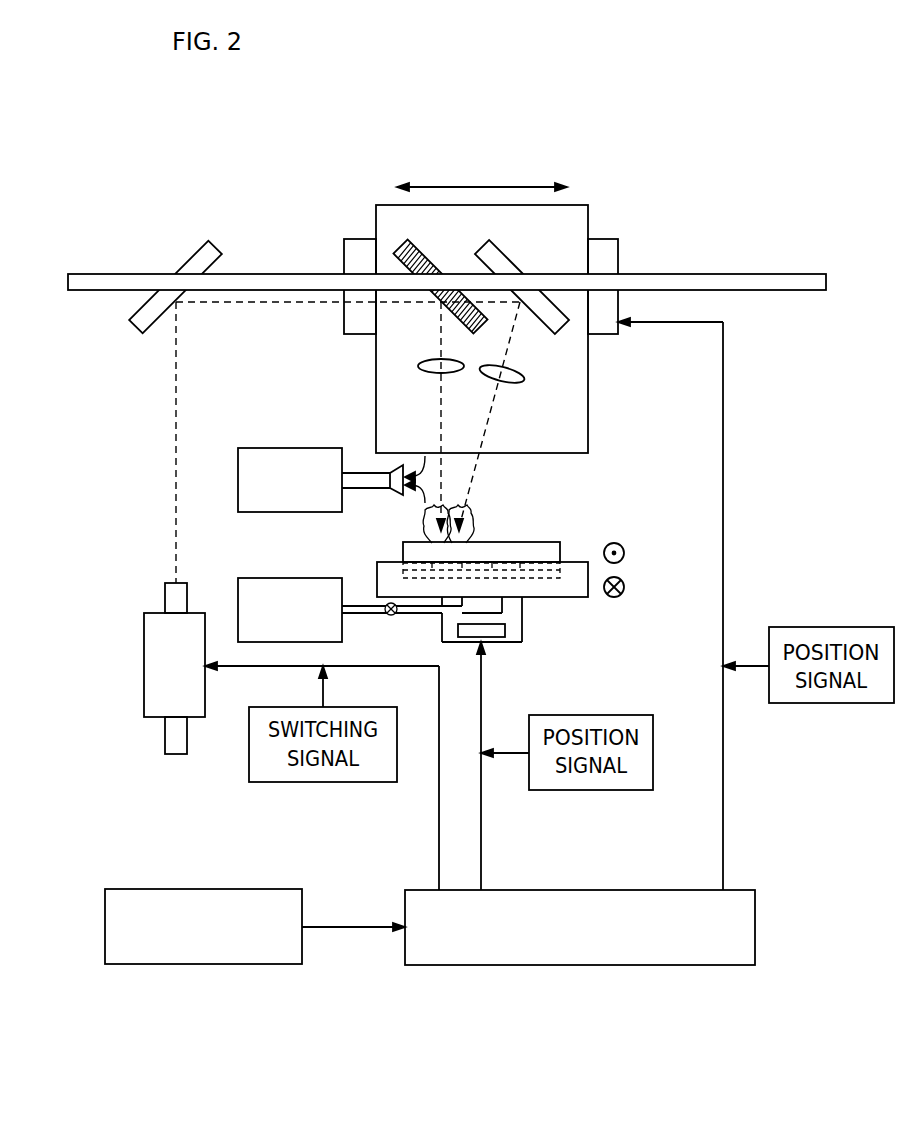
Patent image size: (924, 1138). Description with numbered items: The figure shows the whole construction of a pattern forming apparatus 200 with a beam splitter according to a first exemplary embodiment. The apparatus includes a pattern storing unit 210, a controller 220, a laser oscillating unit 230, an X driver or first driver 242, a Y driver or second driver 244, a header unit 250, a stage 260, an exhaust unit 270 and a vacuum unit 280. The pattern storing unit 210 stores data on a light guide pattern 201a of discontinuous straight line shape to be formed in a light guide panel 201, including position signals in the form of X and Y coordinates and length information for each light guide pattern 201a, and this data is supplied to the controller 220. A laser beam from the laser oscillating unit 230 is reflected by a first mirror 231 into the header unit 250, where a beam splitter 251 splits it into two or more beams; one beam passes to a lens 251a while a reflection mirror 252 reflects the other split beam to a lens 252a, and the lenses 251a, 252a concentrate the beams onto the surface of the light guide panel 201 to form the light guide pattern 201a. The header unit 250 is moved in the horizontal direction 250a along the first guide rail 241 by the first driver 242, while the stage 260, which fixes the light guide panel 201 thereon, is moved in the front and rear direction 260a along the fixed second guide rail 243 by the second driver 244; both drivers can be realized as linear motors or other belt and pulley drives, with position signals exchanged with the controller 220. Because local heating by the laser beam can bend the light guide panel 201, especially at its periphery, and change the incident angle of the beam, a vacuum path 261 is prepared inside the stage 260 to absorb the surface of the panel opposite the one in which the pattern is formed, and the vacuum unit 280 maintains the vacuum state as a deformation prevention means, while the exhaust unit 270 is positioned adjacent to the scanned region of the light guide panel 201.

The laser patterning apparatus 200 is at (705, 133).
The light guide panel 201 is at (545, 542).
The light guide pattern 201a is at (526, 541).
The pattern storing unit 210 is at (105, 927).
The controller 220 is at (755, 927).
The laser oscillating unit 230 is at (144, 666).
The first mirror 231 is at (192, 252).
The first guide rail 241 is at (90, 274).
The X driver (first driver) 242 is at (618, 255).
The second guide rail 243 is at (505, 630).
The Y driver (second driver) 244 is at (523, 625).
The header unit 250 is at (588, 218).
The horizontal direction 250a is at (482, 188).
The beam splitter 251 is at (408, 250).
The lens 251a is at (425, 361).
The reflection mirror 252 is at (488, 250).
The lens 252a is at (520, 368).
The stage 260 is at (376, 564).
The front and rear direction 260a is at (624, 553).
The vacuum path 261 is at (485, 587).
The exhaust unit 270 is at (295, 448).
The vacuum unit 280 is at (295, 578).